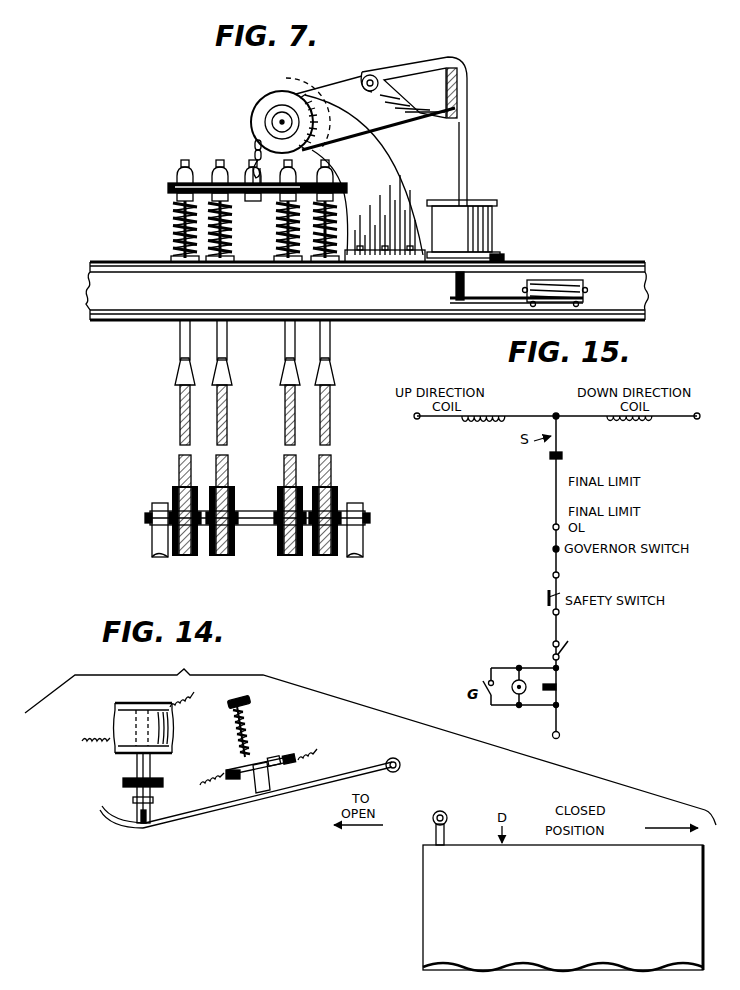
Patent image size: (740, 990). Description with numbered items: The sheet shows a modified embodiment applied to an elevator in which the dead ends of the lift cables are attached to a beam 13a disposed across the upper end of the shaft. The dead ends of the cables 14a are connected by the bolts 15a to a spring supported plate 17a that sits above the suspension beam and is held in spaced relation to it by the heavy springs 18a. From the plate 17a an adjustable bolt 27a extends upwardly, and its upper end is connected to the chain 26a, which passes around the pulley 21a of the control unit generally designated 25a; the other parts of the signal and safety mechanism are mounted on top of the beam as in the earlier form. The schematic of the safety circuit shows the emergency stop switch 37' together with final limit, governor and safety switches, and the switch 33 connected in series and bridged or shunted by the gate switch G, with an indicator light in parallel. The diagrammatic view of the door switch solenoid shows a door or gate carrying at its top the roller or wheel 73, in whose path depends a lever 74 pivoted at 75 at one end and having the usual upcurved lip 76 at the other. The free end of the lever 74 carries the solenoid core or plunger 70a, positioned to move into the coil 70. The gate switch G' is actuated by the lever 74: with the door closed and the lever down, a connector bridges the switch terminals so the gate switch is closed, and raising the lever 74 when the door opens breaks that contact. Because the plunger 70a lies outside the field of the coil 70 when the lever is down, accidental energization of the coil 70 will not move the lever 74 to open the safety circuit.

In FIG. 7, the beam 13a is at (88, 289).
In FIG. 7, the cables 14a is at (222, 450).
In FIG. 7, the bolts 15a is at (218, 357).
In FIG. 7, the spring supported plate 17a is at (168, 188).
In FIG. 7, the heavy springs 18a is at (176, 230).
In FIG. 7, the pulley 21a is at (285, 97).
In FIG. 7, the control unit 25a is at (257, 97).
In FIG. 7, the chain 26a is at (255, 142).
In FIG. 7, the adjustable bolt 27a is at (252, 166).
In FIG. 7, the switch 33 is at (557, 282).
In FIG. 15, the switch 33 is at (558, 690).
In FIG. 15, the emergency stop switch 37' is at (532, 602).
In FIG. 14, the solenoid coil 70 is at (170, 738).
In FIG. 14, the solenoid core or plunger 70a is at (137, 771).
In FIG. 14, the gate switch lever operating roller or wheel 73 is at (447, 814).
In FIG. 14, the lever 74 is at (184, 808).
In FIG. 14, the pivot 75 is at (398, 762).
In FIG. 14, the upcurved lip 76 is at (126, 819).
In FIG. 14, the gate switch G is at (256, 768).
In FIG. 14, the gate switch G' is at (259, 726).